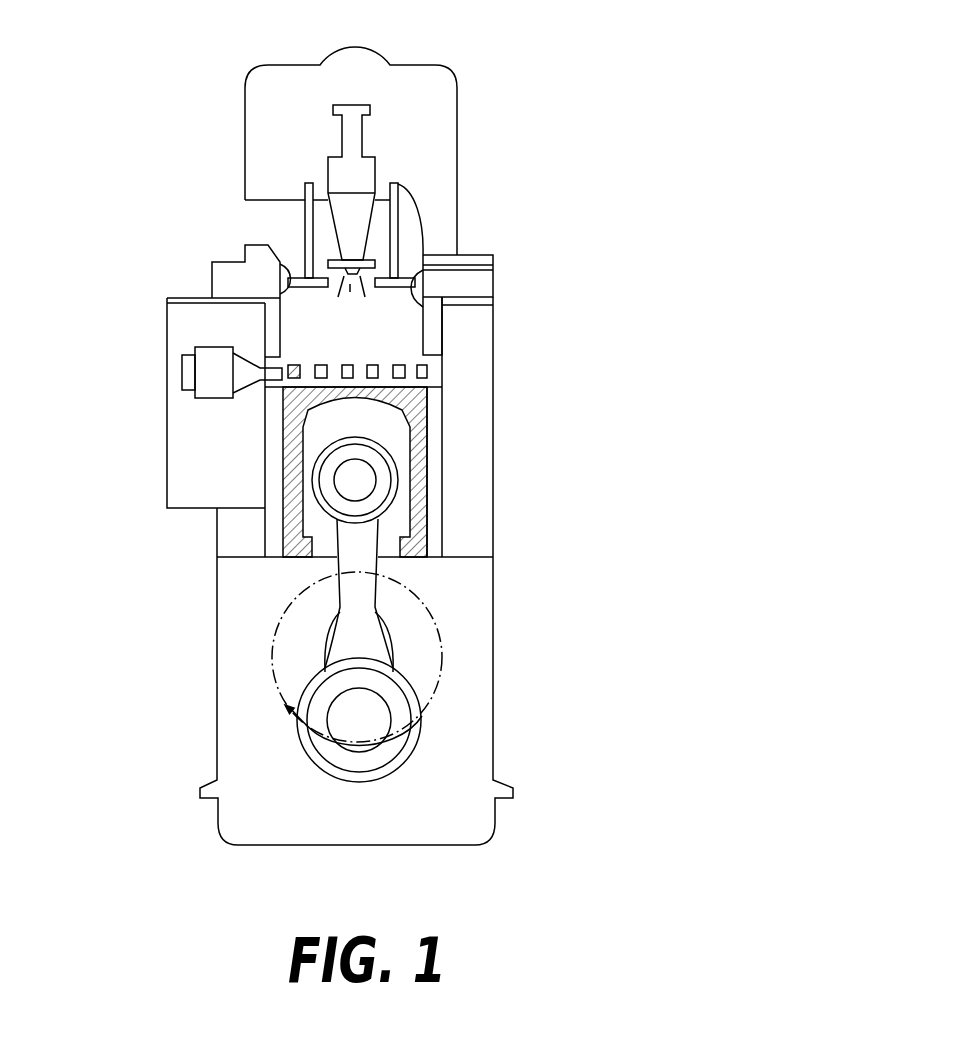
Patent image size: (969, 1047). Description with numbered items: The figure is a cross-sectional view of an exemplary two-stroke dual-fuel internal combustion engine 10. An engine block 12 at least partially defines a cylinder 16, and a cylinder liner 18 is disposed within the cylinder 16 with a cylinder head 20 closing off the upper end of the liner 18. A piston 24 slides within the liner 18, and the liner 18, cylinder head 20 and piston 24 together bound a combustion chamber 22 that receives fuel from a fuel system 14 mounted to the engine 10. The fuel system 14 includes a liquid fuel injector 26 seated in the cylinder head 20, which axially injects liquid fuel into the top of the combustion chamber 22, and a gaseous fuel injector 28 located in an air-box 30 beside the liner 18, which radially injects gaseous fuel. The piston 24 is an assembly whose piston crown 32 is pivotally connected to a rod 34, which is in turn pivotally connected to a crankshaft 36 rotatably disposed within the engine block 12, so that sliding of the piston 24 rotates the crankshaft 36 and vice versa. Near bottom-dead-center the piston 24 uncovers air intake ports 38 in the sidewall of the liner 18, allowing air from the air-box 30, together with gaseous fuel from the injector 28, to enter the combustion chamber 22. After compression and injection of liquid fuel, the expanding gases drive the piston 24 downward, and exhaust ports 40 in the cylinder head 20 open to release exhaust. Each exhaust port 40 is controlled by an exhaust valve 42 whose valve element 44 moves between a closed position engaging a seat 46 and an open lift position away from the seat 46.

The internal combustion engine 10 is at (528, 60).
The engine block 12 is at (495, 425).
The fuel system 14 is at (349, 298).
The cylinder 16 is at (443, 335).
The cylinder liner 18 is at (430, 448).
The cylinder head 20 is at (493, 258).
The combustion chamber 22 is at (359, 354).
The piston 24 is at (462, 617).
The liquid fuel injector 26 is at (373, 160).
The gaseous fuel injector 28 is at (213, 388).
The air-box 30 is at (185, 488).
The piston crown 32 is at (428, 522).
The rod 34 is at (348, 617).
The crankshaft 36 is at (363, 715).
The air intake port 38 is at (445, 368).
The exhaust port 40 is at (280, 270).
The exhaust valve 42 is at (305, 178).
The valve element 44 is at (305, 222).
The seat 46 is at (167, 303).